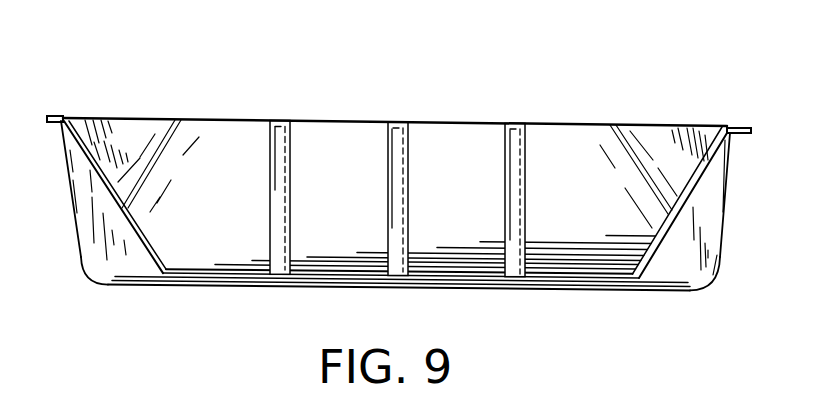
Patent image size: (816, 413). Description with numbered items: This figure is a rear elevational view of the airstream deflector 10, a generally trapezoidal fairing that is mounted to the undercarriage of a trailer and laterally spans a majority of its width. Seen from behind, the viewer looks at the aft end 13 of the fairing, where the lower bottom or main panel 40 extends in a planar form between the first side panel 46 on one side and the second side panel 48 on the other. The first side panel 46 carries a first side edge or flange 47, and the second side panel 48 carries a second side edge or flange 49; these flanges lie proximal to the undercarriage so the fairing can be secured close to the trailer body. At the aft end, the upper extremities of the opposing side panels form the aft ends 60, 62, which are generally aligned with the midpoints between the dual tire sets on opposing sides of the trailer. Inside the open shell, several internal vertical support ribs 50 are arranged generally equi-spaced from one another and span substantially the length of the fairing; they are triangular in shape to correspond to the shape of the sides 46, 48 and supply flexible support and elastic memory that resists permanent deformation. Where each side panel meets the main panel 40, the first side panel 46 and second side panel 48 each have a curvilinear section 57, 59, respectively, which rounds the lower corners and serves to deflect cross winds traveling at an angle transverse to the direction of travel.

The airstream deflector 10 is at (703, 89).
The aft end 13 is at (216, 279).
The main panel 40 is at (348, 160).
The first side panel 46 is at (116, 142).
The first side edge or flange 47 is at (50, 123).
The second side panel 48 is at (677, 157).
The second side edge or flange 49 is at (745, 134).
The internal vertical support ribs 50 is at (299, 133).
The curvilinear section 57 is at (88, 278).
The curvilinear section 59 is at (707, 285).
The aft end of side panel 60 is at (58, 116).
The aft end of side panel 62 is at (751, 127).